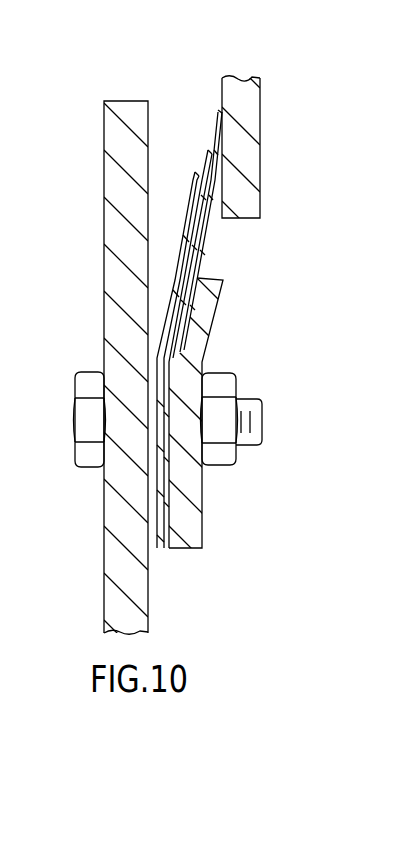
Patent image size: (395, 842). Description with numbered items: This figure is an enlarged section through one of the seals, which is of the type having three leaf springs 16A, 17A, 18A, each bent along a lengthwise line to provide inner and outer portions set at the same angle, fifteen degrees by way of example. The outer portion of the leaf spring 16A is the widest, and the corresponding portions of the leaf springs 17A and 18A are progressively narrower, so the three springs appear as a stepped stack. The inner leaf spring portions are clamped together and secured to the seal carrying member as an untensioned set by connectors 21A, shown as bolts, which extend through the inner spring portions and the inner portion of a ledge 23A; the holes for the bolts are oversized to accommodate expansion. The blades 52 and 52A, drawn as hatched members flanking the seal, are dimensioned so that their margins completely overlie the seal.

The blade 52 is at (233, 78).
The blade 52A is at (120, 100).
The leaf spring 16A is at (218, 114).
The leaf spring 17A is at (210, 152).
The leaf spring 18A is at (198, 173).
The connector 21A is at (78, 371).
The ledge 23A is at (200, 278).